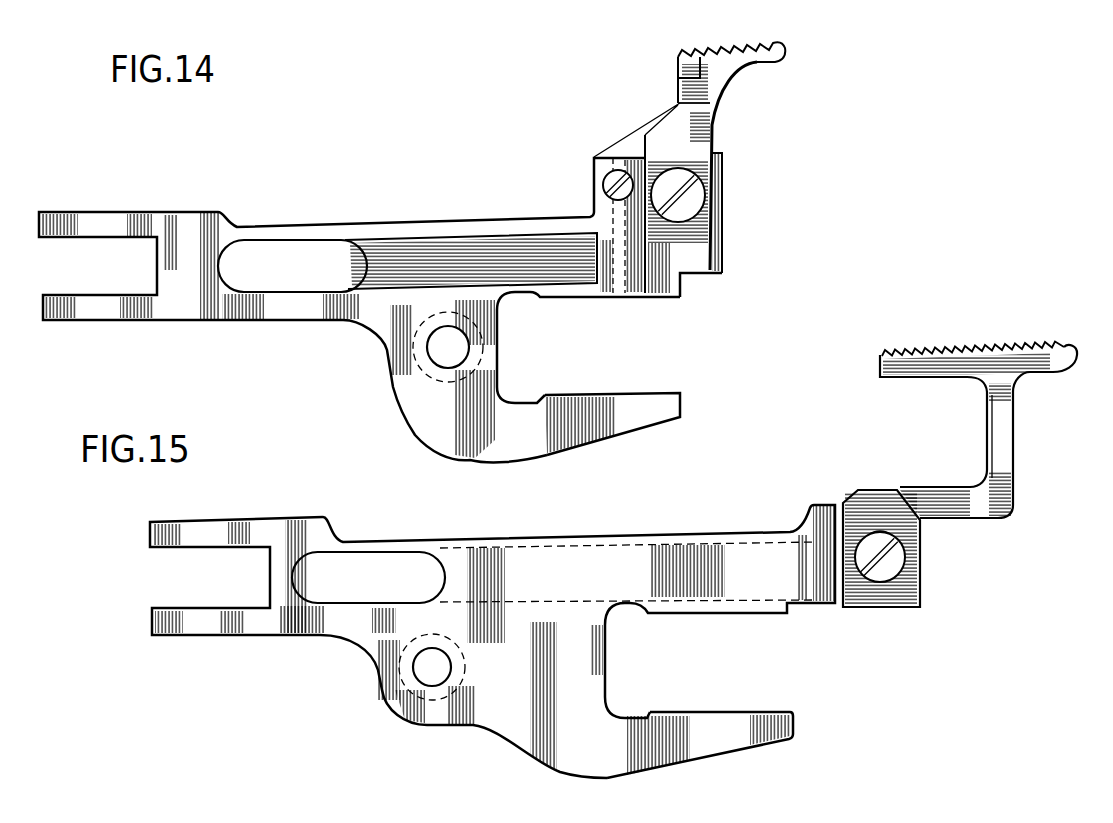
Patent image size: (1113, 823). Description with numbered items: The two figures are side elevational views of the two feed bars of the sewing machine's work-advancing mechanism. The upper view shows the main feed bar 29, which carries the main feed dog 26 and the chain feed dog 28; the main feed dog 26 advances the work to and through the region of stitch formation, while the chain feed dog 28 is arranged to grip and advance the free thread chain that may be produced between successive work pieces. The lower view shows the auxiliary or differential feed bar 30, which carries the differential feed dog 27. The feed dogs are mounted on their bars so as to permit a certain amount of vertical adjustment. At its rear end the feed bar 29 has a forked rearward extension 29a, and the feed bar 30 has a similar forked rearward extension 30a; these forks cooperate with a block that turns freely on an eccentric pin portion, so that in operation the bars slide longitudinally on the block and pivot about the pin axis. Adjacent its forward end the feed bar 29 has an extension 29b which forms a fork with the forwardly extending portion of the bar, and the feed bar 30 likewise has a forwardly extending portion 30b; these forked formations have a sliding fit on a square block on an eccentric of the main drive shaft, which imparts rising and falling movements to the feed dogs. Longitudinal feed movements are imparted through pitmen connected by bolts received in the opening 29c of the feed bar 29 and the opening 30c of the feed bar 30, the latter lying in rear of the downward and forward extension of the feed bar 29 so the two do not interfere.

In FIG. 14, the main feed dog 26 is at (757, 55).
In FIG. 15, the auxiliary or differential feed dog 27 is at (980, 363).
In FIG. 14, the chain feed dog 28 is at (686, 68).
In FIG. 14, the feed bar 29 is at (505, 222).
In FIG. 14, the forked rearward extension 29a is at (106, 220).
In FIG. 14, the extension 29b is at (630, 403).
In FIG. 14, the opening 29c is at (443, 352).
In FIG. 15, the feed bar 30 is at (627, 543).
In FIG. 15, the forked rearward extension 30a is at (213, 527).
In FIG. 15, the forwardly extending portion 30b is at (728, 718).
In FIG. 15, the opening 30c is at (425, 673).